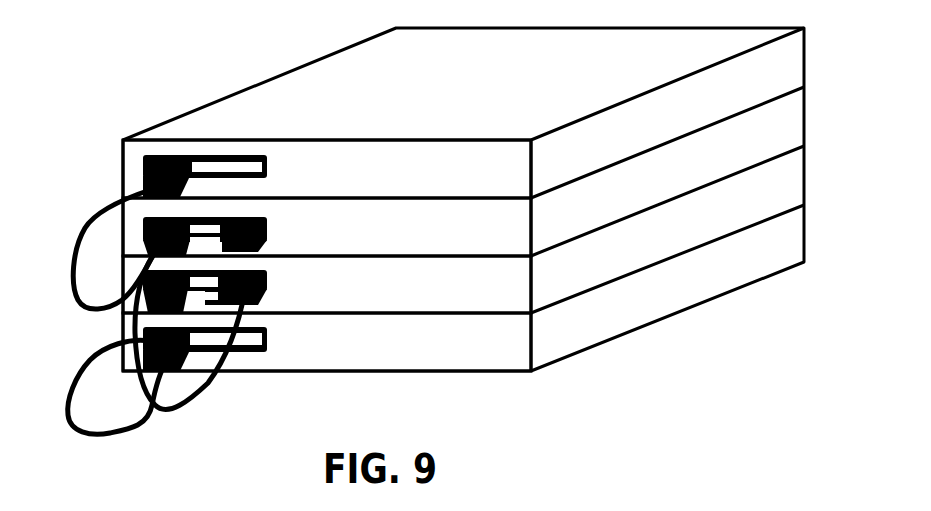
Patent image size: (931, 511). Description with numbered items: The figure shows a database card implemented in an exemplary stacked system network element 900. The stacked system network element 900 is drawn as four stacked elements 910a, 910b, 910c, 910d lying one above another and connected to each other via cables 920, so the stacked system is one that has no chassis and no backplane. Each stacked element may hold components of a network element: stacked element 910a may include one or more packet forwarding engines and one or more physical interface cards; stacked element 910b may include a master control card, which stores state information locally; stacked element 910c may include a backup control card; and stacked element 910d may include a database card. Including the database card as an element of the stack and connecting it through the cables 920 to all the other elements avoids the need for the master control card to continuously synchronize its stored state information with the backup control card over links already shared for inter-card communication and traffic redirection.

The stacked system network element 900 is at (212, 81).
The stacked element 910a is at (327, 169).
The stacked element 910b is at (327, 227).
The stacked element 910c is at (327, 284).
The stacked element 910d is at (327, 342).
The cables 920 is at (86, 356).